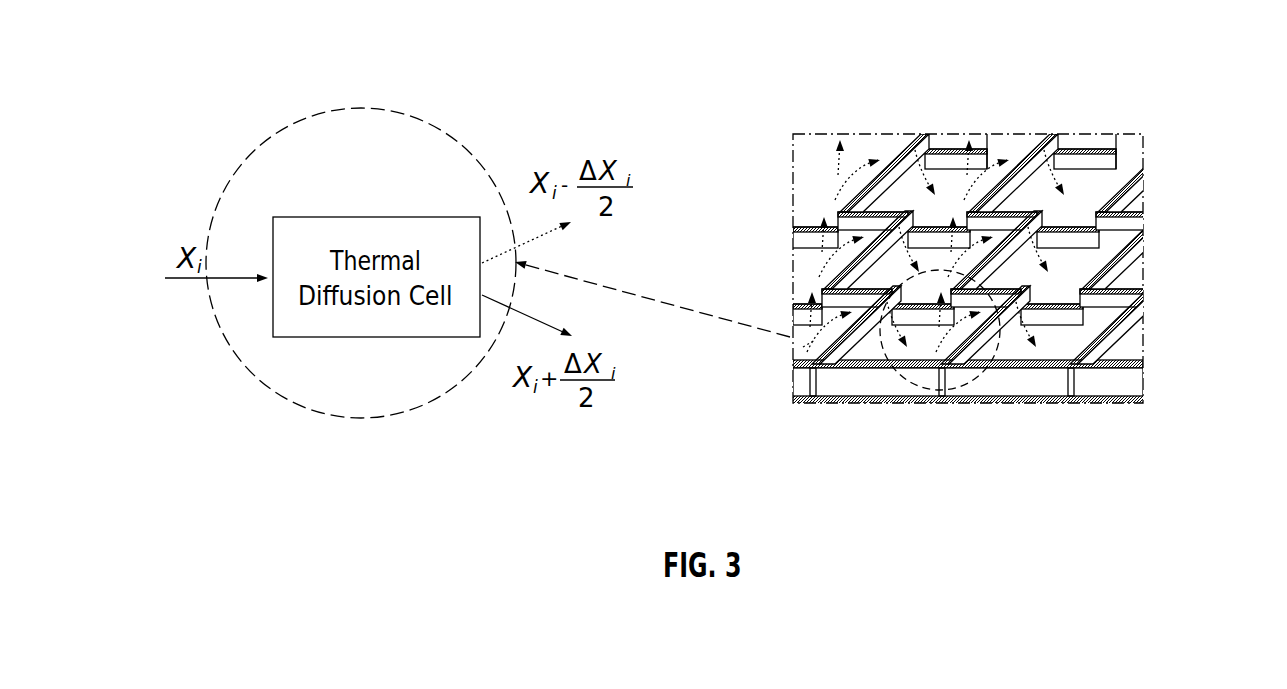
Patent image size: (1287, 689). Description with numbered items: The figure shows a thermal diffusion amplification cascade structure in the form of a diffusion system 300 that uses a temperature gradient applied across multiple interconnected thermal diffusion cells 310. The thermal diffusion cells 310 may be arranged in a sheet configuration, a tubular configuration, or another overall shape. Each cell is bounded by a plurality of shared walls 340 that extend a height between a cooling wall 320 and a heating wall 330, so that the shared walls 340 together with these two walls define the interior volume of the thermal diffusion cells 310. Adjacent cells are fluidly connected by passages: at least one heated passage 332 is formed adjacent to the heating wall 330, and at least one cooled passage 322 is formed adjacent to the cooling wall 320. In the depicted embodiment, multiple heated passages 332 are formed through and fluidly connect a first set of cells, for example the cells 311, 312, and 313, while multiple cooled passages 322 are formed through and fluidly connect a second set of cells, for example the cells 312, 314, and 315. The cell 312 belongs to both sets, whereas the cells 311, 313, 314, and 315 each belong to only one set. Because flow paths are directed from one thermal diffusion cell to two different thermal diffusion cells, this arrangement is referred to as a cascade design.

The diffusion system 300 is at (1162, 44).
The thermal diffusion cells 310 is at (1020, 113).
The thermal diffusion cell 311 is at (914, 342).
The thermal diffusion cell 312 is at (915, 258).
The thermal diffusion cell 313 is at (921, 134).
The thermal diffusion cell 314 is at (813, 349).
The thermal diffusion cell 315 is at (1116, 150).
The cooling wall 320 is at (1130, 398).
The cooled passage 322 is at (1113, 228).
The heating wall 330 is at (1132, 367).
The heated passage 332 is at (1100, 212).
The shared walls 340 is at (1087, 395).